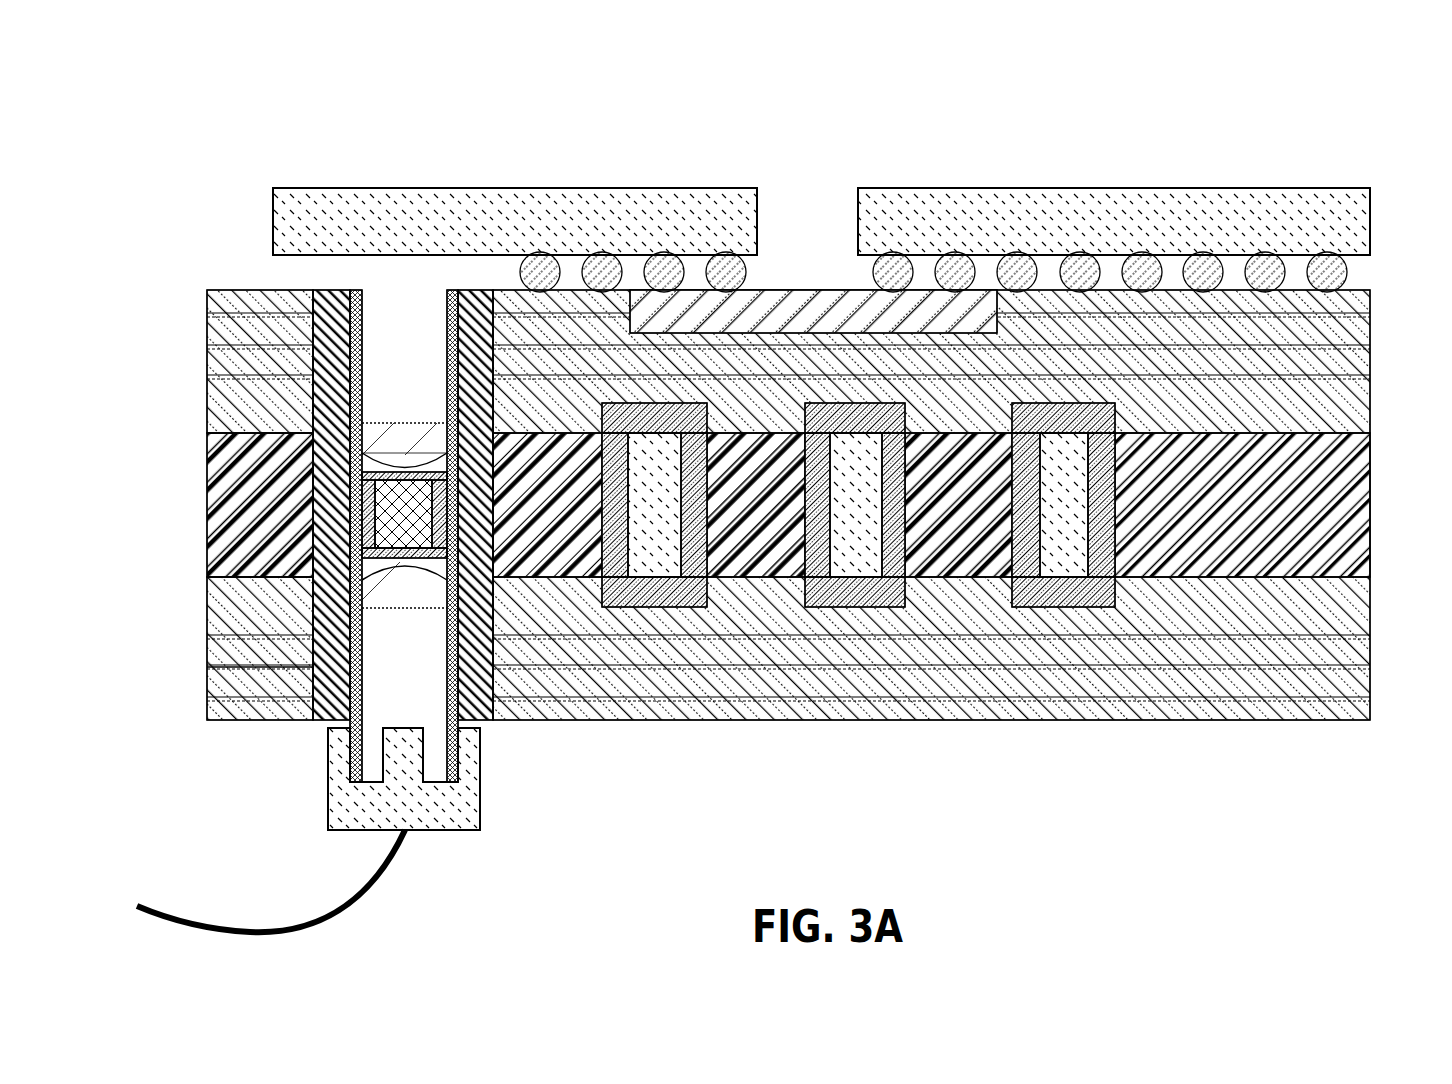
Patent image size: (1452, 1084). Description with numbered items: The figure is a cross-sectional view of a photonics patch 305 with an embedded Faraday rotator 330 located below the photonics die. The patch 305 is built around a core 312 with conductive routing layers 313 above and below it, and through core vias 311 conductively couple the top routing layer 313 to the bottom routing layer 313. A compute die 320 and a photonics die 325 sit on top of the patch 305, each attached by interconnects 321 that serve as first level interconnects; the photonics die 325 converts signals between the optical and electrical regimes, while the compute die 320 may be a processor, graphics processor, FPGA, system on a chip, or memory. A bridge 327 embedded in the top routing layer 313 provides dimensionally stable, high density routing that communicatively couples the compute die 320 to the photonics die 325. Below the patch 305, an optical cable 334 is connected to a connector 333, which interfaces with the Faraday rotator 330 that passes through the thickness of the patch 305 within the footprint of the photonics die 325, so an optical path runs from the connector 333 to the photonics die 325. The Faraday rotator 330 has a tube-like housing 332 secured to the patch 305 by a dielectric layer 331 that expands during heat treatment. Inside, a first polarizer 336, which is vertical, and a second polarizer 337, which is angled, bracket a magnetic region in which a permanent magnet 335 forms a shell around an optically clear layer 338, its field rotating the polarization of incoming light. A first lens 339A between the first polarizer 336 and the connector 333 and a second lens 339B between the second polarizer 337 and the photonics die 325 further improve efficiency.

The photonics patch 305 is at (1302, 97).
The through core vias 311 is at (1098, 523).
The core 312 is at (1348, 553).
The conductive routing layers 313 is at (1360, 410).
The compute die 320 is at (1098, 215).
The interconnects 321 is at (1332, 270).
The photonics die 325 is at (653, 212).
The bridge 327 is at (800, 308).
The Faraday rotator 330 is at (300, 490).
The dielectric layer 331 is at (326, 723).
The housing 332 is at (348, 668).
The connector 333 is at (450, 822).
The optical cable 334 is at (317, 920).
The permanent magnet 335 is at (397, 480).
The first polarizer 336 is at (402, 560).
The second polarizer 337 is at (423, 480).
The optically clear layer 338 is at (505, 560).
The first lens 339A is at (373, 595).
The second lens 339B is at (310, 423).